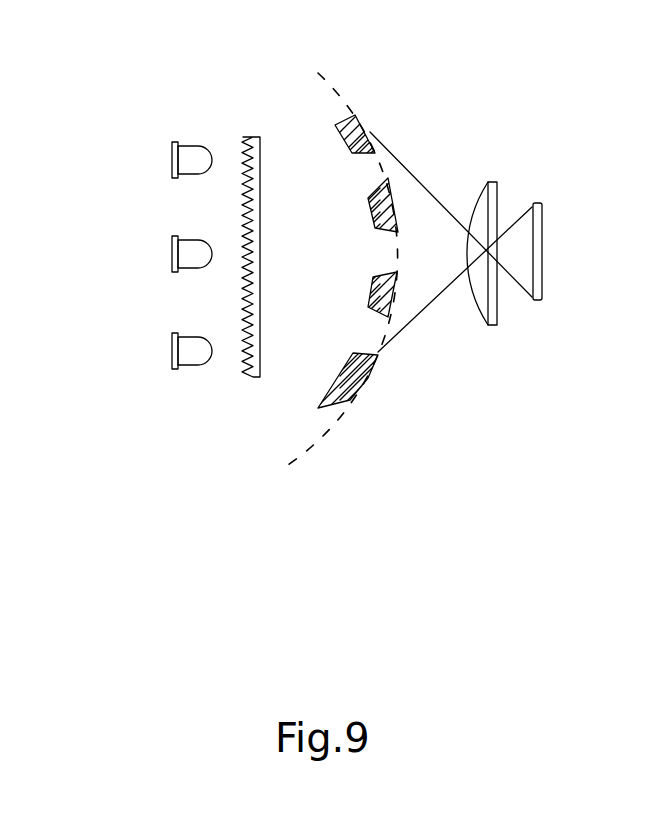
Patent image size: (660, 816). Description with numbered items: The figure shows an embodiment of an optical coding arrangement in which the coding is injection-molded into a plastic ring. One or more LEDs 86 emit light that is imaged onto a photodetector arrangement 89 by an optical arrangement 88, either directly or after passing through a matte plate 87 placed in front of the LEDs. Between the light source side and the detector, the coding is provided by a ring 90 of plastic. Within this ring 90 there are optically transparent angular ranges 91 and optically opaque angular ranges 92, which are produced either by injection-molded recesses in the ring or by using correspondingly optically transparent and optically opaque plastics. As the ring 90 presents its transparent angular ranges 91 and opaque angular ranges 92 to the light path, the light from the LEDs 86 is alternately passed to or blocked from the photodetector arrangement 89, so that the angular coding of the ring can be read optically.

The LED 86 is at (172, 347).
The matte plate 87 is at (250, 137).
The optical arrangement 88 is at (478, 200).
The photodetector arrangement 89 is at (538, 220).
The ring 90 is at (312, 447).
The optically transparent angular range 91 is at (382, 348).
The optically opaque angular range 92 is at (367, 374).